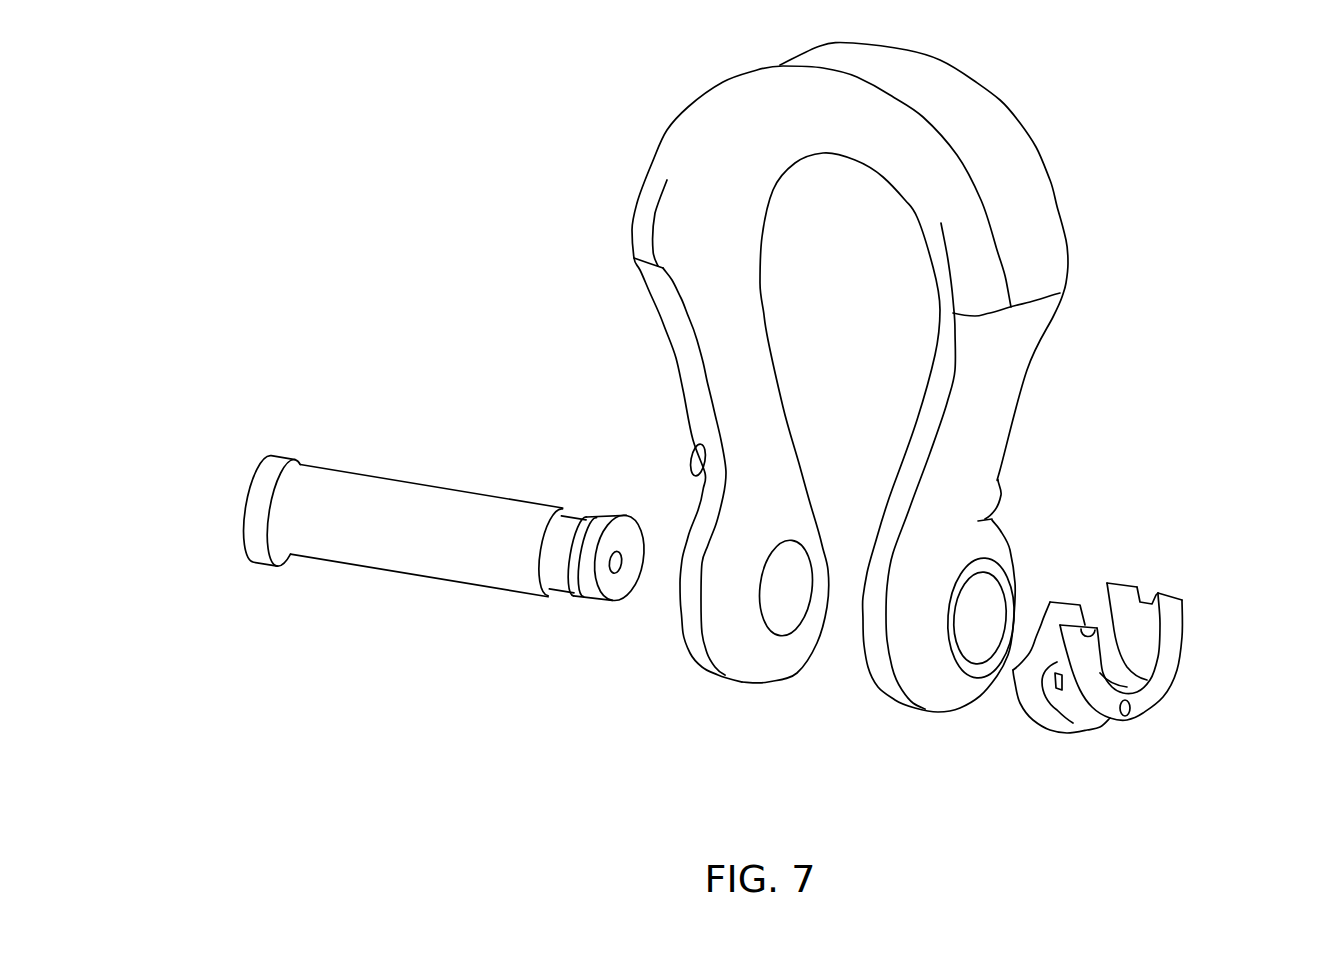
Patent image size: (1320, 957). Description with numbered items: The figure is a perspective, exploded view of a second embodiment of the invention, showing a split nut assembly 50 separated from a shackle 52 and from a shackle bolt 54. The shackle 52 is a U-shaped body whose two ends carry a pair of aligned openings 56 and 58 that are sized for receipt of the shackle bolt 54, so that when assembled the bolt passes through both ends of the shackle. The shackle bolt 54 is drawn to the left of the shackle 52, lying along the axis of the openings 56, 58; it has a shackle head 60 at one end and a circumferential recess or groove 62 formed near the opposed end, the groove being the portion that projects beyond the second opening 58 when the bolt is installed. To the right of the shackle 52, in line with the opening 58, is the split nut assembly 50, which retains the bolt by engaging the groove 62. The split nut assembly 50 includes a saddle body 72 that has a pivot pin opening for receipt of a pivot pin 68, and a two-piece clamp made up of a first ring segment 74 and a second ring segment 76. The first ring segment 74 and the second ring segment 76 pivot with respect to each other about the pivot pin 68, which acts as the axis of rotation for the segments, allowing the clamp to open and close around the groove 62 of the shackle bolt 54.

The split nut assembly 50 is at (1096, 751).
The shackle 52 is at (1020, 368).
The shackle bolt 54 is at (440, 503).
The opening 56 is at (770, 609).
The opening 58 is at (970, 650).
The shackle head 60 is at (278, 455).
The circumferential recess or groove 62 is at (575, 520).
The pivot pin 68 is at (1131, 714).
The saddle body 72 is at (1165, 662).
The first ring segment 74 is at (1058, 608).
The second ring segment 76 is at (1143, 586).